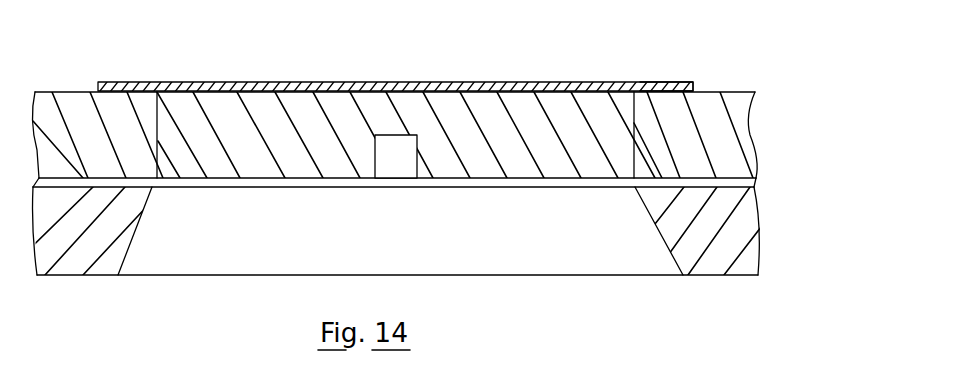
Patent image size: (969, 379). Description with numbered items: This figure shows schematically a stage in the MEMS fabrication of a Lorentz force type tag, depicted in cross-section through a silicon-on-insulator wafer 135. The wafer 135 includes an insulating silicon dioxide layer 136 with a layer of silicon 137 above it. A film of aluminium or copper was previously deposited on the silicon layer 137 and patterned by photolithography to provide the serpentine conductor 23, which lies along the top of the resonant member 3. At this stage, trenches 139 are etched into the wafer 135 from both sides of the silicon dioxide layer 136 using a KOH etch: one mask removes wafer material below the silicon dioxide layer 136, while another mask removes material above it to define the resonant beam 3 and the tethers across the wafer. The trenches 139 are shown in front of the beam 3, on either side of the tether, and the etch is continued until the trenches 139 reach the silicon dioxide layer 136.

The resonant member 3 is at (497, 90).
The serpentine conductor 23 is at (653, 90).
The silicon-on-insulator wafer 135 is at (762, 225).
The silicon dioxide layer 136 is at (750, 179).
The silicon (111) layer 137 is at (742, 137).
The trenches 139 is at (400, 165).